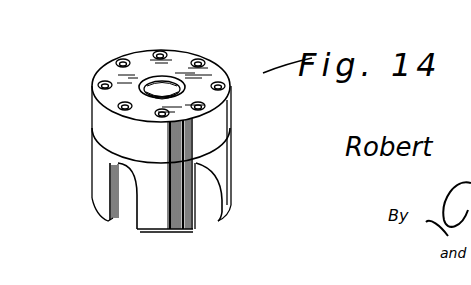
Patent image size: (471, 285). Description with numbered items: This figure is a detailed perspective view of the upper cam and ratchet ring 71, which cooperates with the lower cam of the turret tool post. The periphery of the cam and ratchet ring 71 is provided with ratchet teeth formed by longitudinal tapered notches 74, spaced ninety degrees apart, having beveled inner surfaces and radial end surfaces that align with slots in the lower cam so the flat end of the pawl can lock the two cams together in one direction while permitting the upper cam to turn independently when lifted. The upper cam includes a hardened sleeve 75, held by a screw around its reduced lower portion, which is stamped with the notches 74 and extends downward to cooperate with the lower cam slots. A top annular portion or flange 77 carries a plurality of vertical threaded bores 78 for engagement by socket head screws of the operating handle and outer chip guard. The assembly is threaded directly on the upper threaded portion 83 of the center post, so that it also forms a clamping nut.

The upper cam and ratchet ring 71 is at (82, 125).
The longitudinal tapered notches 74 is at (205, 213).
The sleeve 75 is at (222, 163).
The top annular portion or flange 77 is at (222, 120).
The vertical threaded bores 78 is at (162, 52).
The upper threaded portion of the center post 83 is at (150, 74).